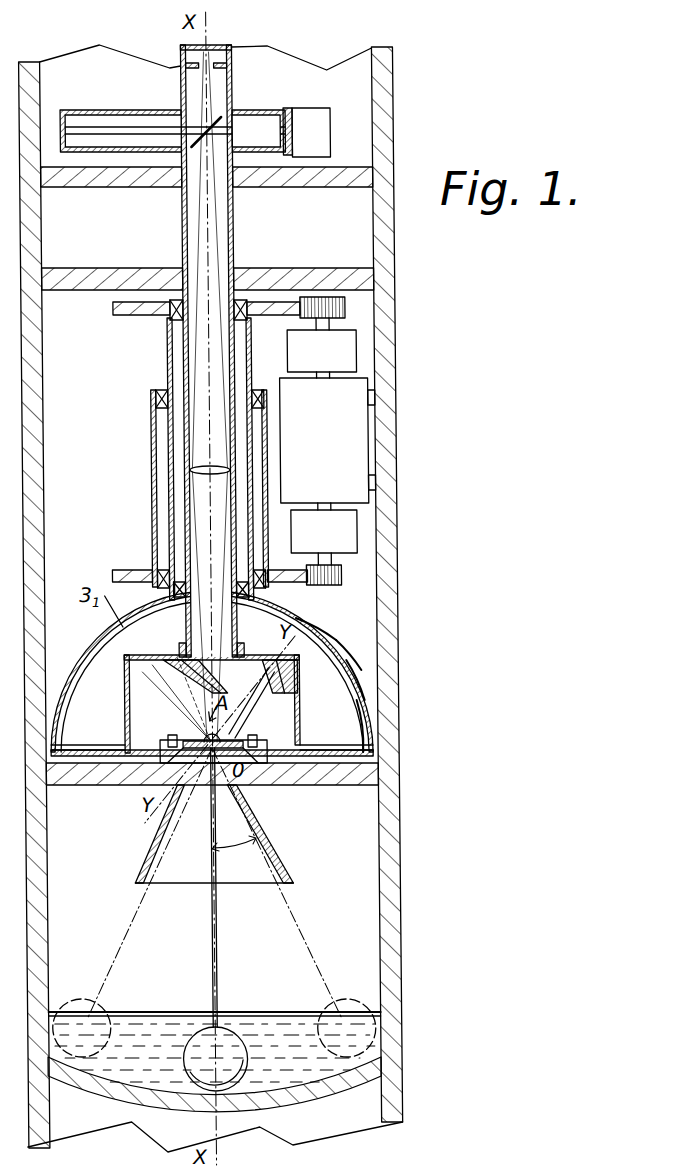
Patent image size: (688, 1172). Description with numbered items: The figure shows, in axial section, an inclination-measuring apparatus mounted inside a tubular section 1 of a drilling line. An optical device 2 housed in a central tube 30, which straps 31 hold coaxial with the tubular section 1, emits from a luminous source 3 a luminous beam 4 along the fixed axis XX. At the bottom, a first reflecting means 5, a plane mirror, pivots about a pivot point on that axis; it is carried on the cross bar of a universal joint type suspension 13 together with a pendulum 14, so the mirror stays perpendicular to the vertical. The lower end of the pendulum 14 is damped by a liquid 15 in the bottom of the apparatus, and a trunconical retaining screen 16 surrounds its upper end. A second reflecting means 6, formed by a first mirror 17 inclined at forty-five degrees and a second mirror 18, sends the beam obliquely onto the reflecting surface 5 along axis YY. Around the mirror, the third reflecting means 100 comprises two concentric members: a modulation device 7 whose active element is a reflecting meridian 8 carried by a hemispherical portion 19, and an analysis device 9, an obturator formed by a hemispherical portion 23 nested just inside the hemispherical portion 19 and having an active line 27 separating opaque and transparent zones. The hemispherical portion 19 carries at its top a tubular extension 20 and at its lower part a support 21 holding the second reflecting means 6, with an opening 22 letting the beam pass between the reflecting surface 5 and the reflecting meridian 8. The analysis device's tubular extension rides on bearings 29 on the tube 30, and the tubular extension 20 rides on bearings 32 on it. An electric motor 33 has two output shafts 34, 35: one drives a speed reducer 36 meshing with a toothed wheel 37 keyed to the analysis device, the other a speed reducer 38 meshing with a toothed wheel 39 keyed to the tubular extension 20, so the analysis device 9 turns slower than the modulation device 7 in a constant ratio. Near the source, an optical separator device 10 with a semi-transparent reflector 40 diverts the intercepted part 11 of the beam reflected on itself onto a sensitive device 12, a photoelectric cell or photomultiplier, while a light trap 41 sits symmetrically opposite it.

The tubular section 1 is at (393, 567).
The optical device 2 is at (233, 222).
The luminous source 3 is at (207, 56).
The luminous beam 4 is at (202, 287).
The first reflecting means 5 is at (224, 731).
The second reflecting means 6 is at (249, 652).
The modulation device 7 is at (326, 622).
The reflecting meridian 8 is at (78, 642).
The analysis device 9 is at (348, 668).
The optical separator device 10 is at (241, 166).
The intercepted part 11 is at (267, 131).
The sensitive device 12 is at (316, 122).
The universal joint type suspension 13 is at (162, 732).
The pendulum 14 is at (207, 926).
The liquid 15 is at (268, 1060).
The retaining screen 16 is at (257, 823).
The first mirror 17 is at (192, 664).
The second mirror 18 is at (286, 667).
The hemispherical portion 19 is at (342, 647).
The tubular extension 20 is at (148, 506).
The support 21 is at (293, 711).
The opening 22 is at (118, 714).
The hemispherical portion 23 is at (356, 699).
The active line 27 is at (164, 478).
The bearings 29 is at (167, 314).
The tube 30 is at (179, 211).
The straps 31 is at (91, 278).
The bearings 32 is at (152, 397).
The electric motor 33 is at (328, 440).
The output shaft 34 is at (318, 375).
The output shaft 35 is at (318, 503).
The speed reducer 36 is at (322, 345).
The toothed wheel 37 is at (259, 306).
The speed reducer 38 is at (324, 537).
The toothed wheel 39 is at (292, 576).
The semi-transparent reflector 40 is at (185, 137).
The light trap 41 is at (107, 132).
The third reflecting means 100 is at (346, 633).